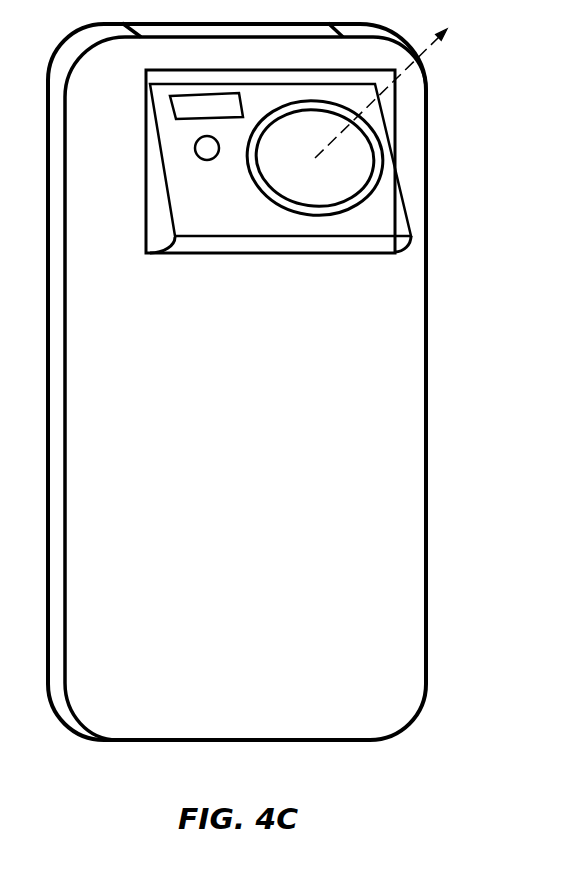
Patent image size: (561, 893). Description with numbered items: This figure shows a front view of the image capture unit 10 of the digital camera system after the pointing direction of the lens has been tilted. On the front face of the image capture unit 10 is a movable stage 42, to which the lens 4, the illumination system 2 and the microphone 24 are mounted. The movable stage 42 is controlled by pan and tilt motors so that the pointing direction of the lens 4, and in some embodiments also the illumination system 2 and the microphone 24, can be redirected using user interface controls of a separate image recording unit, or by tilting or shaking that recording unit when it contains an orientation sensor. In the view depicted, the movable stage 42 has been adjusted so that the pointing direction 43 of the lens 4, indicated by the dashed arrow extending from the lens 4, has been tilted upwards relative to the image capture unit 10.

The image capture unit 10 is at (427, 339).
The movable stage 42 is at (397, 222).
The illumination system 2 is at (158, 118).
The microphone 24 is at (195, 148).
The lens 4 is at (275, 173).
The pointing direction 43 is at (430, 53).